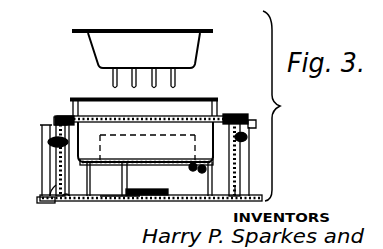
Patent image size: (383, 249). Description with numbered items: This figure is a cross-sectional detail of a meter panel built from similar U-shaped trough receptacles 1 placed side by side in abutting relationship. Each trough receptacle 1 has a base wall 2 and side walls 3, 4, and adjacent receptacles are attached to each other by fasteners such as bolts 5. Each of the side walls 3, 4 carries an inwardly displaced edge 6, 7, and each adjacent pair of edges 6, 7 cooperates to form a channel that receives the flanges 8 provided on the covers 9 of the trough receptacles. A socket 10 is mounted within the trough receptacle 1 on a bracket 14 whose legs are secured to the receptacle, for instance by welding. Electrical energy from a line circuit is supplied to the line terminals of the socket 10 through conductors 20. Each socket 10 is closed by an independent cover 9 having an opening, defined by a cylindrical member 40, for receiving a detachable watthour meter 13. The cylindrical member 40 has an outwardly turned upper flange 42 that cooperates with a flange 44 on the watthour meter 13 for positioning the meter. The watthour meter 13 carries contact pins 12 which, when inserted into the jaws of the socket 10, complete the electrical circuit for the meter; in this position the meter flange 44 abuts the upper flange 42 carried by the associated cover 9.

The trough receptacle 1 is at (120, 199).
The base wall 2 is at (43, 199).
The side wall 3 is at (72, 203).
The side wall 4 is at (54, 188).
The bolt 5 is at (50, 142).
The inwardly displaced edge 6 is at (64, 117).
The inwardly displaced edge 7 is at (56, 122).
The flange 8 is at (60, 117).
The cover 9 is at (67, 115).
The socket 10 is at (112, 140).
The contact pin 12 is at (172, 78).
The watthour meter 13 is at (249, 37).
The bracket 14 is at (204, 198).
The conductor 20 is at (154, 192).
The cylindrical member 40 is at (213, 148).
The upper flange 42 is at (215, 96).
The flange 44 is at (80, 30).